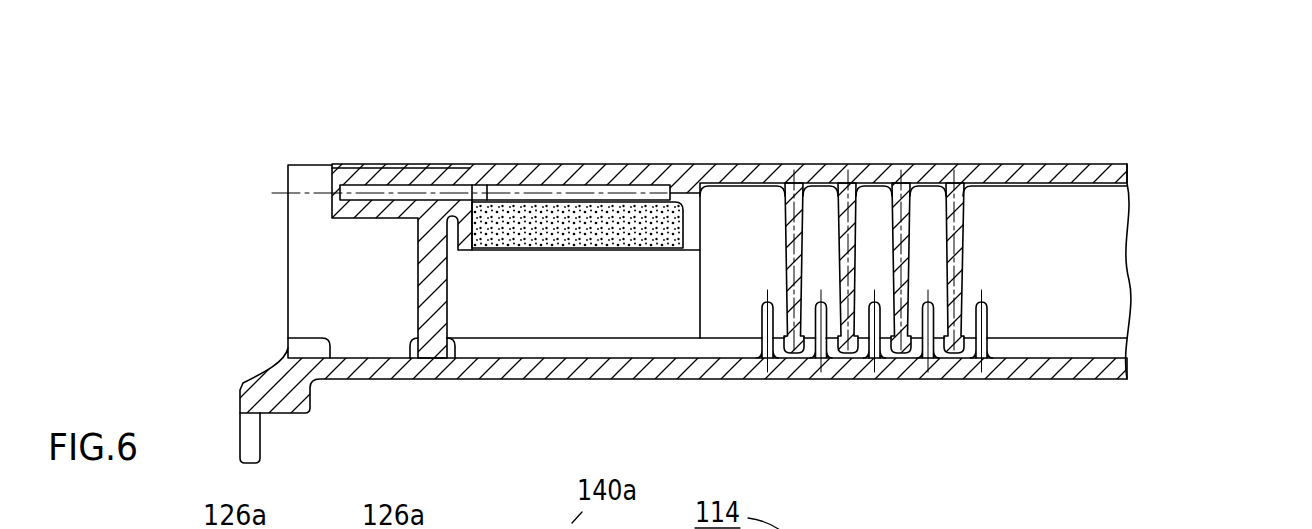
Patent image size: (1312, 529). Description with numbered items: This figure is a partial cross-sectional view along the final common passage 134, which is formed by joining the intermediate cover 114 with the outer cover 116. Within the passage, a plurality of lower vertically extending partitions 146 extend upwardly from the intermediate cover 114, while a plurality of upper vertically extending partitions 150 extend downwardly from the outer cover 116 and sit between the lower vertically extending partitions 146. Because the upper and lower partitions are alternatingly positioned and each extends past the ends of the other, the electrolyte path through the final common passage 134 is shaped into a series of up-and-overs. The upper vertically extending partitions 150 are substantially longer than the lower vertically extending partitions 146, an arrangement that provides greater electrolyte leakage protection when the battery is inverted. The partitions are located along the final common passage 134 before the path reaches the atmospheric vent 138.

The intermediate cover 114 is at (1088, 368).
The outer cover 116 is at (1050, 163).
The final common passage 134 is at (1078, 248).
The atmospheric vent 138 is at (528, 220).
The lower vertically extending partitions 146 is at (1052, 460).
The upper vertically extending partitions 150 is at (957, 255).